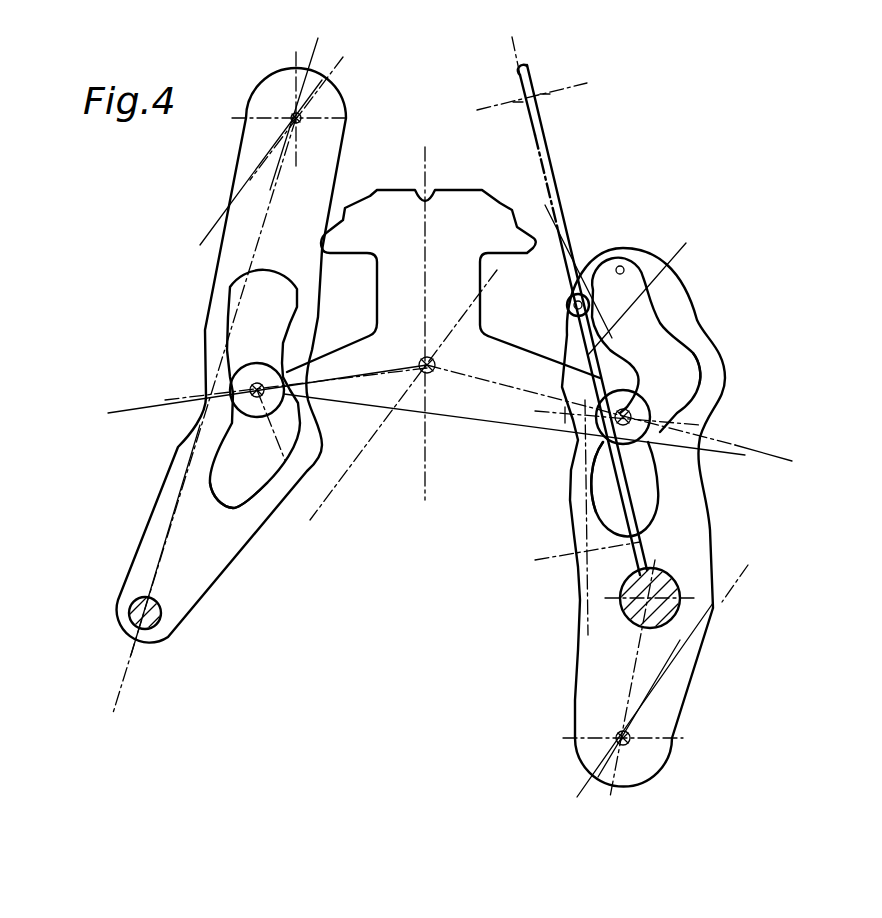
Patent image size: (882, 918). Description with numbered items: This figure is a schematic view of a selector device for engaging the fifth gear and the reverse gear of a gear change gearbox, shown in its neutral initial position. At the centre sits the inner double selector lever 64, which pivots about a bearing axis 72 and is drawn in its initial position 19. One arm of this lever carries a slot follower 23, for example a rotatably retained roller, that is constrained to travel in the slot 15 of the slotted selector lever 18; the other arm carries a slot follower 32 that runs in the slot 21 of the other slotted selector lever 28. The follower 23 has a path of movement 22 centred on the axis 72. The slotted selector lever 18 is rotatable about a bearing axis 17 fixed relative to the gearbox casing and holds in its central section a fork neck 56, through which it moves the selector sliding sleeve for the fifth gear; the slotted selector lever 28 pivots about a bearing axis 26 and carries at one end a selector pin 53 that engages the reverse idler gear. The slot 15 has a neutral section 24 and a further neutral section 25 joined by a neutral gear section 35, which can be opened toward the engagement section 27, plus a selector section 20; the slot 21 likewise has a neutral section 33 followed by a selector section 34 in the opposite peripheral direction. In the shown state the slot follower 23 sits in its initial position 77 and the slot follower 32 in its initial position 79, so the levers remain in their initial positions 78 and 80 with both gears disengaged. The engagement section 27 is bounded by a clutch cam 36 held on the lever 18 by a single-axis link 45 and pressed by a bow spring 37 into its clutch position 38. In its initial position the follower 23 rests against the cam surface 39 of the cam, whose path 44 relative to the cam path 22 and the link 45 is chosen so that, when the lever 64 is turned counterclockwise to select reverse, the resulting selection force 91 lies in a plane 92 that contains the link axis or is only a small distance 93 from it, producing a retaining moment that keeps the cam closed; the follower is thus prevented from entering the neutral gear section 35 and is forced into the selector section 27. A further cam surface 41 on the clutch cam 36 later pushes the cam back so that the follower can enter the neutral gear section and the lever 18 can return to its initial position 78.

The slot 15 is at (640, 362).
The bearing axis 17 is at (720, 616).
The slotted selector lever 18 is at (687, 533).
The initial position 19 is at (490, 192).
The selector section 20 is at (600, 492).
The slot 21 is at (222, 326).
The path of movement 22 is at (582, 222).
The slot follower 23 is at (668, 456).
The neutral section 24 is at (583, 417).
The neutral section 25 is at (624, 266).
The bearing axis 26 is at (348, 63).
The engagement section 27 is at (688, 366).
The slotted selector lever 28 is at (240, 230).
The slot follower 32 is at (236, 382).
The neutral section 33 is at (255, 290).
The selector section 34 is at (268, 480).
The neutral gear section 35 is at (668, 314).
The clutch cam 36 is at (645, 350).
The bow spring 37 is at (565, 338).
The clutch position 38 is at (580, 562).
The cam surface 39 is at (645, 375).
The cam surface 41 is at (652, 289).
The path 44 is at (742, 292).
The link 45 is at (566, 300).
The selector pin 53 is at (133, 614).
The fork neck 56 is at (674, 590).
The double selector lever 64 is at (488, 430).
The bearing axis 72 is at (465, 302).
The initial position 77 is at (782, 450).
The initial position 78 is at (640, 685).
The initial position 79 is at (145, 412).
The initial position 80 is at (157, 571).
The selection force 91 is at (640, 497).
The plane 92 is at (540, 128).
The distance 93 is at (520, 75).